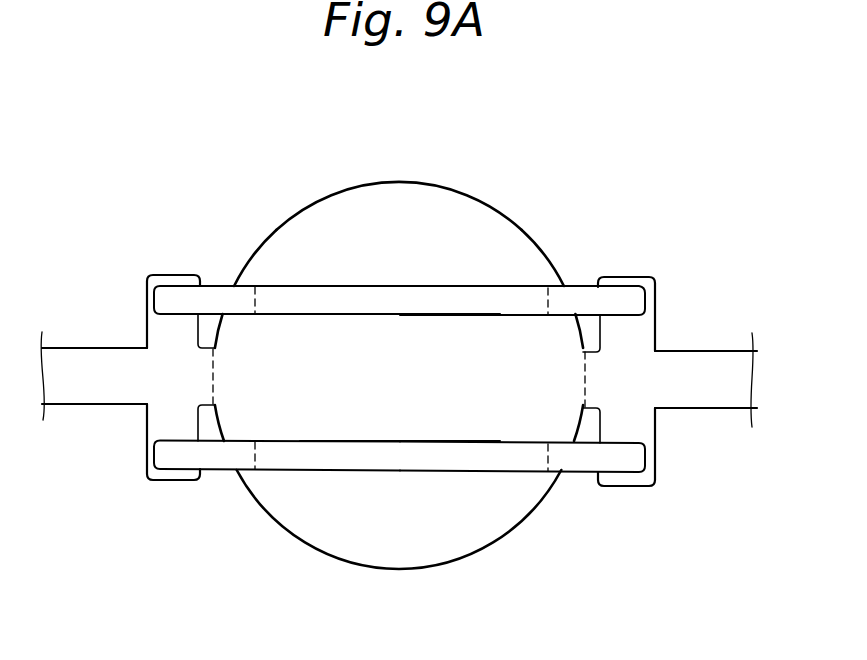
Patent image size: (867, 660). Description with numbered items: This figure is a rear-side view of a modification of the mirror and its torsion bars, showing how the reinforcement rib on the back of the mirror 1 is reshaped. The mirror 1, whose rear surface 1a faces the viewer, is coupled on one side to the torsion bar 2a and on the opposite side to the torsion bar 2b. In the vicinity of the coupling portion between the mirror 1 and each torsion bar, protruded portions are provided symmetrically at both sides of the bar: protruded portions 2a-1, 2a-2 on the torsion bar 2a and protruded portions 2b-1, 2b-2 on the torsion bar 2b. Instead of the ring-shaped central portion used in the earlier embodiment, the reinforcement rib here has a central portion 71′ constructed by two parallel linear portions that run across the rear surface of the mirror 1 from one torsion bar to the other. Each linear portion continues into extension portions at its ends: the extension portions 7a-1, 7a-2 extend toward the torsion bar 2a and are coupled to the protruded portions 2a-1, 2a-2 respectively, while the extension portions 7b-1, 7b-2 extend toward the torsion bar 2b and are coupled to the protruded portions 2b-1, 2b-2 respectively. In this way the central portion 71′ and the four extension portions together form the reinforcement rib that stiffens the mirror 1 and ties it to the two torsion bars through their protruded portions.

The mirror 1 is at (467, 187).
The outer peripheral surface of body 1a is at (388, 210).
The torsion bar 2a is at (728, 392).
The torsion bar 2b is at (92, 385).
The protruded portion 2a-1 is at (622, 490).
The protruded portion 2a-2 is at (623, 276).
The protruded portion 2b-1 is at (181, 482).
The protruded portion 2b-2 is at (172, 273).
The extension portion 7a-1 is at (632, 458).
The extension portion 7a-2 is at (637, 302).
The extension portion 7b-1 is at (163, 452).
The extension portion 7b-2 is at (157, 302).
The central portion 71′ is at (383, 314).